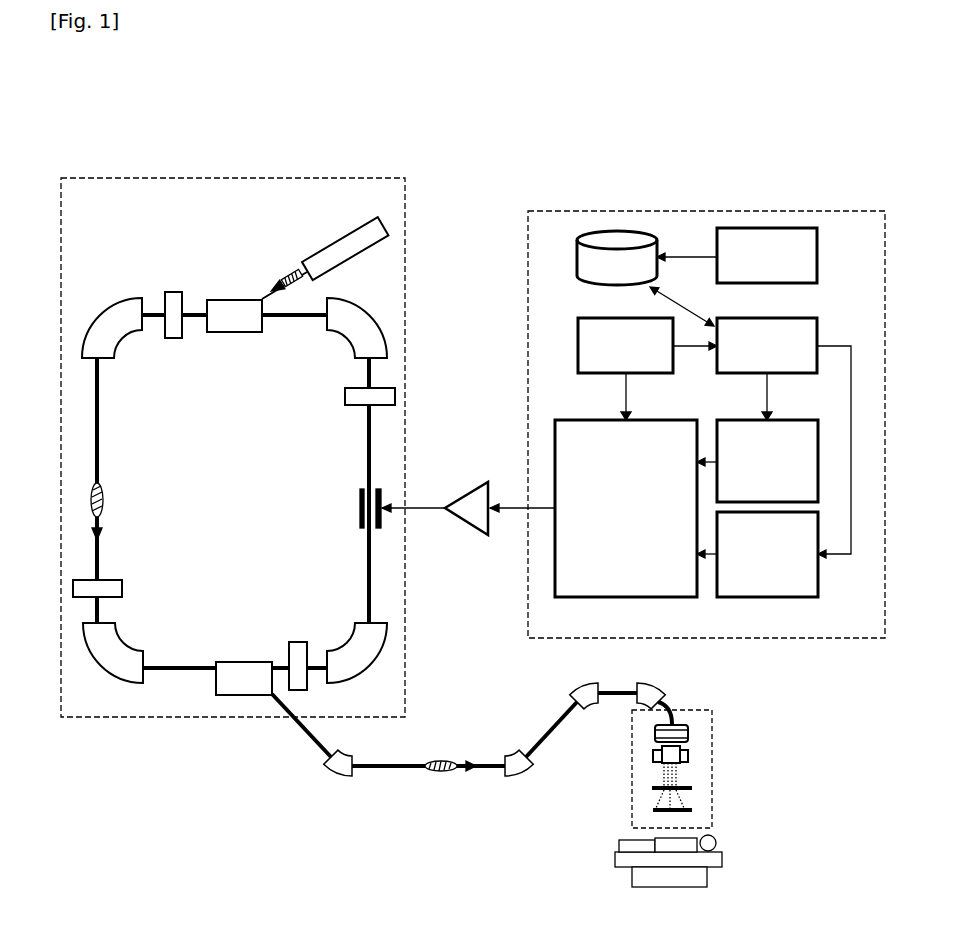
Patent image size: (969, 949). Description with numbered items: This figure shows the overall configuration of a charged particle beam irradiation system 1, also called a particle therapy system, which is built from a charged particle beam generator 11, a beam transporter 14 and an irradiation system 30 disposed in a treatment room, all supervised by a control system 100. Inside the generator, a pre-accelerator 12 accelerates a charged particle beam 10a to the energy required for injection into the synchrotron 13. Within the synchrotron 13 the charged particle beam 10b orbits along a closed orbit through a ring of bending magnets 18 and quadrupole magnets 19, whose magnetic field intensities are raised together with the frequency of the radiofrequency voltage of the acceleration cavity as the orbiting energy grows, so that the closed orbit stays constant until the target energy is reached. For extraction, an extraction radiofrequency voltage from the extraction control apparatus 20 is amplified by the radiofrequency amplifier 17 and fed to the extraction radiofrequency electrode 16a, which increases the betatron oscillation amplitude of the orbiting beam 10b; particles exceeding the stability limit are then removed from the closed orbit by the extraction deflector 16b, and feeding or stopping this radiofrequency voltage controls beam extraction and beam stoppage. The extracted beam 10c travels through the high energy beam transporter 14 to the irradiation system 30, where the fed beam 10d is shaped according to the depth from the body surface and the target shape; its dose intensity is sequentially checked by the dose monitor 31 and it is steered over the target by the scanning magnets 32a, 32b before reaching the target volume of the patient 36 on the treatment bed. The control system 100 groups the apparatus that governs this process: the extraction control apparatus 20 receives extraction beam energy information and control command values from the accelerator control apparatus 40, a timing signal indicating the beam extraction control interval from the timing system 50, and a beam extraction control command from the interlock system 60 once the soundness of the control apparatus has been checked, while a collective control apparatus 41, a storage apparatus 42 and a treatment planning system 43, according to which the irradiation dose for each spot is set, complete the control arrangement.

The charged particle beam irradiation system 1 is at (437, 134).
The charged particle beam generator 11 is at (156, 176).
The pre-accelerator 12 is at (338, 250).
The synchrotron 13 is at (233, 484).
The beam transporter 14 is at (303, 742).
The radiofrequency amplifier 17 is at (468, 490).
The bending magnet 18 is at (106, 329).
The quadrupole magnet 19 is at (173, 318).
The charged particle beam 10a is at (290, 275).
The charged particle beam 10b is at (105, 500).
The beam 10c is at (432, 774).
The beam 10d is at (662, 780).
The extraction radiofrequency electrode 16a is at (358, 508).
The extraction deflector 16b is at (235, 698).
The extraction control apparatus 20 is at (626, 508).
The irradiation system 30 is at (669, 737).
The dose monitor 31 is at (693, 788).
The collimator 32a is at (690, 733).
The optical member 32b is at (690, 755).
The patient 36 is at (718, 840).
The accelerator control apparatus 40 is at (767, 461).
The collective control apparatus 41 is at (767, 345).
The storage apparatus 42 is at (617, 258).
The treatment planning system 43 is at (767, 255).
The timing system 50 is at (767, 554).
The interlock system 60 is at (625, 345).
The control system 100 is at (575, 208).